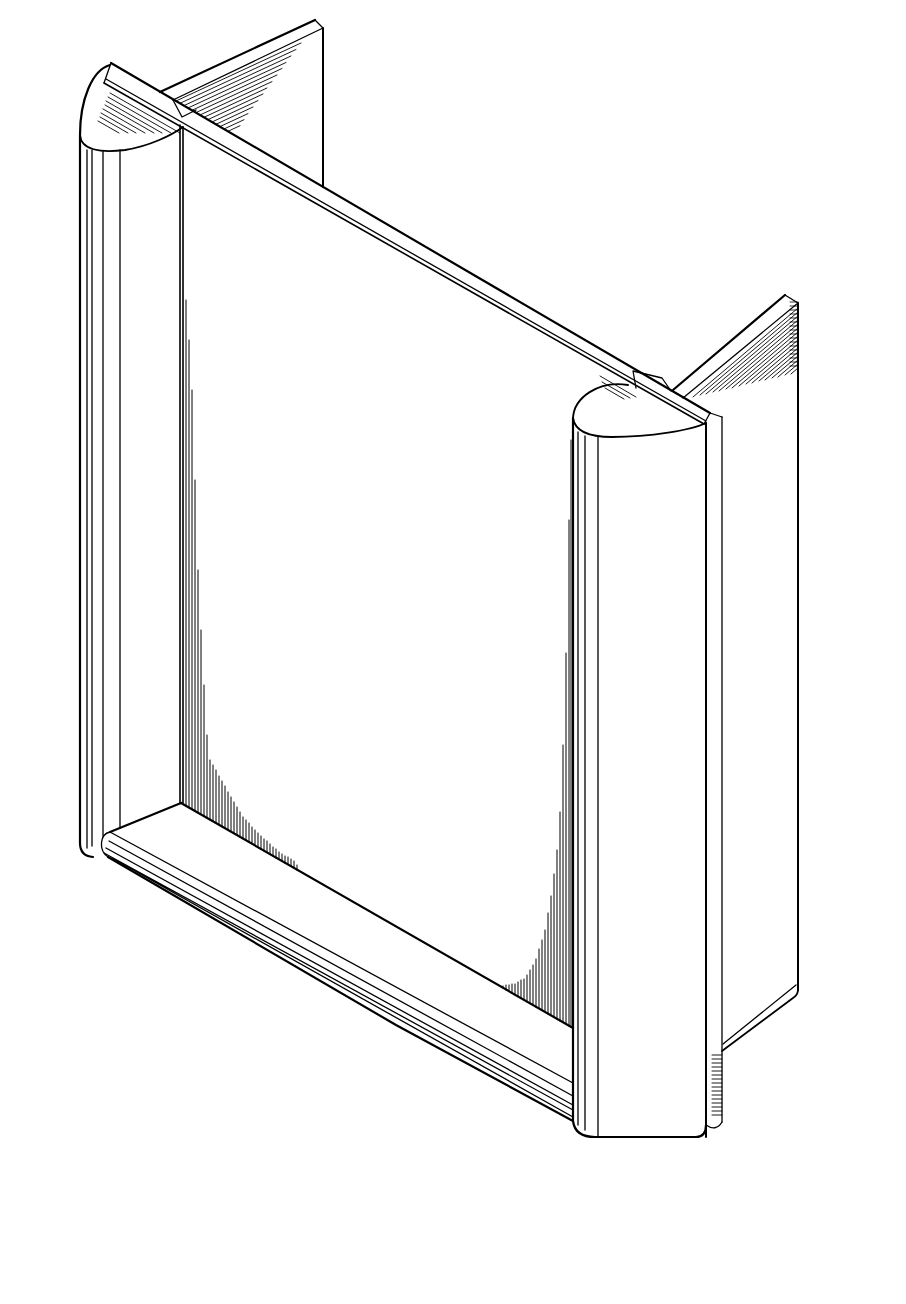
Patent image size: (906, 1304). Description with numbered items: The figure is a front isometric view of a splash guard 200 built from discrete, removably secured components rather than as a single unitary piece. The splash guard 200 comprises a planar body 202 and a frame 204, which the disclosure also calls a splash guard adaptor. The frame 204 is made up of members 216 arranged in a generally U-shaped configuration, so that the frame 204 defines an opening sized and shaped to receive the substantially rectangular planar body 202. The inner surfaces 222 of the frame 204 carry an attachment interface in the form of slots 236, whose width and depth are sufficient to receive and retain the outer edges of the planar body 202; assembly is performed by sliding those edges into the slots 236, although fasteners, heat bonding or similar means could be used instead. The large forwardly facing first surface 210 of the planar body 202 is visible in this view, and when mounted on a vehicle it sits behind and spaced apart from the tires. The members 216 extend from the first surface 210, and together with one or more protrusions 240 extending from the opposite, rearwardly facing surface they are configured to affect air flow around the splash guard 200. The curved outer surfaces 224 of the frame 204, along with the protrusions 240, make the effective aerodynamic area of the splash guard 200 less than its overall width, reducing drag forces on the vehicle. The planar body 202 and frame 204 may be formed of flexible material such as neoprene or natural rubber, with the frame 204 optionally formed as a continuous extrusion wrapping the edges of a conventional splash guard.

The splash guard 200 is at (564, 155).
The planar body 202 is at (420, 257).
The frame 204 is at (96, 58).
The first surface 210 is at (427, 600).
The members 216 is at (112, 108).
The inner surfaces 222 is at (152, 330).
The curved outer surfaces 224 is at (658, 1105).
The slots 236 is at (637, 398).
The protrusions 240 is at (225, 62).